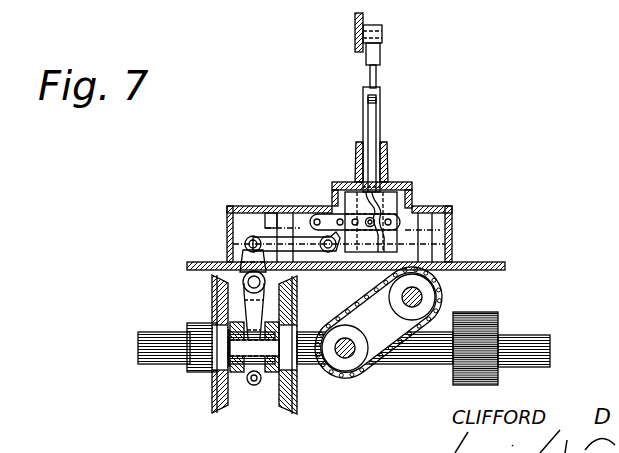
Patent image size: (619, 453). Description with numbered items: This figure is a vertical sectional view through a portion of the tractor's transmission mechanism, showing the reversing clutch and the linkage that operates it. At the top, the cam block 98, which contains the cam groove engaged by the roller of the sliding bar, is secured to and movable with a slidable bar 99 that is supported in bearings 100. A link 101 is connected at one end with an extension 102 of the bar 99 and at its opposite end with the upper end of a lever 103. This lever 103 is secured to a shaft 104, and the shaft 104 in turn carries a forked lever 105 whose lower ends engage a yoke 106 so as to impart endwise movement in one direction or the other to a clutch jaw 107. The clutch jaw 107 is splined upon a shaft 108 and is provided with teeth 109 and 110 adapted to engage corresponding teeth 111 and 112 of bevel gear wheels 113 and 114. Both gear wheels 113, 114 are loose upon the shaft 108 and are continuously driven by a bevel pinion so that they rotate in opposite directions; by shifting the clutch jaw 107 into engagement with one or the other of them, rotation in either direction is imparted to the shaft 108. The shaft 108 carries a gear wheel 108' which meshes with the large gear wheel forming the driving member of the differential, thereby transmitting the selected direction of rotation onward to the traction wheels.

The cam block 98 is at (385, 198).
The slidable bar 99 is at (418, 208).
The bearings 100 is at (284, 220).
The link 101 is at (296, 262).
The extension 102 is at (318, 218).
The lever 103 is at (243, 262).
The shaft 104 is at (232, 278).
The forked lever 105 is at (250, 305).
The yoke 106 is at (256, 362).
The clutch jaw 107 is at (238, 349).
The shaft 108 is at (423, 372).
The gear wheel 108' is at (503, 332).
The teeth 109 is at (238, 320).
The teeth 110 is at (297, 372).
The teeth 111 is at (222, 338).
The teeth 112 is at (302, 331).
The bevel gear wheel 113 is at (222, 395).
The bevel gear wheel 114 is at (290, 410).